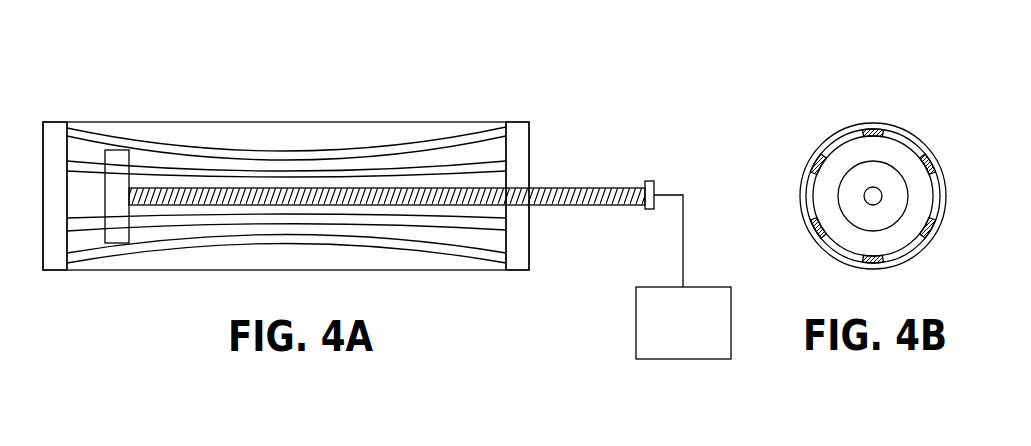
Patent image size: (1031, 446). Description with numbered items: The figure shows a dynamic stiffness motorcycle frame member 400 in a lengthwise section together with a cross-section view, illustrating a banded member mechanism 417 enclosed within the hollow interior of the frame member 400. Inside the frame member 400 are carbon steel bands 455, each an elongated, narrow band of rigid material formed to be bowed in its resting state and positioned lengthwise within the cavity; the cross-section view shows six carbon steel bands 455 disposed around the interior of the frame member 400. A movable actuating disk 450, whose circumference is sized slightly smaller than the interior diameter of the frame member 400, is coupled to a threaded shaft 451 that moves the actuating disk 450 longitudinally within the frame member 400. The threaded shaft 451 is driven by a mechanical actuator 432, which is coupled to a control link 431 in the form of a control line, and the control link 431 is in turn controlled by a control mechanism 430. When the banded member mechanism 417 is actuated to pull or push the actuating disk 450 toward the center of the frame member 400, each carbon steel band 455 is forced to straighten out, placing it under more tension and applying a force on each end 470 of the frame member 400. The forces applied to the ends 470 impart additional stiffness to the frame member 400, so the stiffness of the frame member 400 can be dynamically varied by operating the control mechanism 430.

In FIG. 4A, the dynamic stiffness motorcycle frame member 400 is at (388, 101).
In FIG. 4B, the dynamic stiffness motorcycle frame member 400 is at (806, 117).
In FIG. 4A, the banded member mechanism 417 is at (215, 112).
In FIG. 4A, the control mechanism 430 is at (663, 336).
In FIG. 4A, the control link 431 is at (683, 258).
In FIG. 4A, the mechanical actuator 432 is at (645, 208).
In FIG. 4A, the actuating disk 450 is at (104, 241).
In FIG. 4B, the actuating disk 450 is at (846, 232).
In FIG. 4A, the threaded shaft 451 is at (569, 189).
In FIG. 4B, the threaded shaft 451 is at (883, 196).
In FIG. 4A, the carbon steel bands 455 is at (345, 151).
In FIG. 4B, the carbon steel bands 455 is at (885, 131).
In FIG. 4A, the ends of the frame member 470 is at (55, 126).